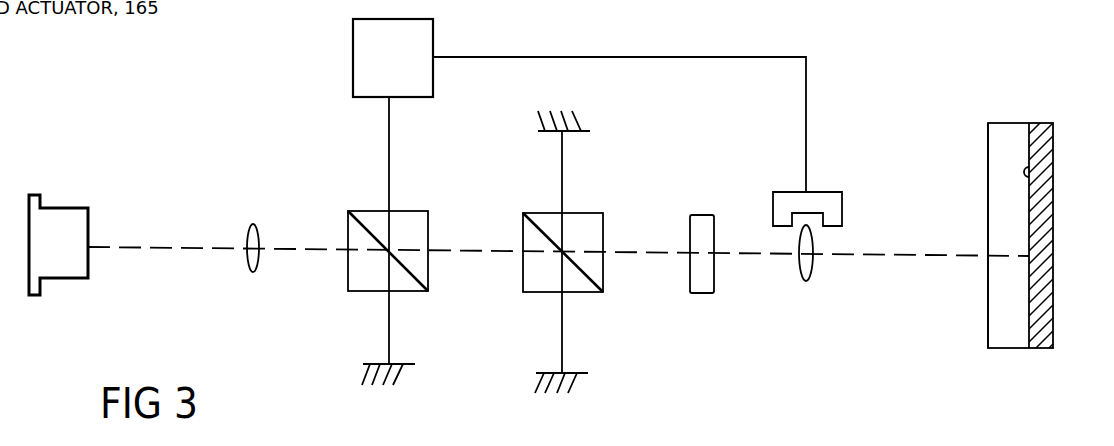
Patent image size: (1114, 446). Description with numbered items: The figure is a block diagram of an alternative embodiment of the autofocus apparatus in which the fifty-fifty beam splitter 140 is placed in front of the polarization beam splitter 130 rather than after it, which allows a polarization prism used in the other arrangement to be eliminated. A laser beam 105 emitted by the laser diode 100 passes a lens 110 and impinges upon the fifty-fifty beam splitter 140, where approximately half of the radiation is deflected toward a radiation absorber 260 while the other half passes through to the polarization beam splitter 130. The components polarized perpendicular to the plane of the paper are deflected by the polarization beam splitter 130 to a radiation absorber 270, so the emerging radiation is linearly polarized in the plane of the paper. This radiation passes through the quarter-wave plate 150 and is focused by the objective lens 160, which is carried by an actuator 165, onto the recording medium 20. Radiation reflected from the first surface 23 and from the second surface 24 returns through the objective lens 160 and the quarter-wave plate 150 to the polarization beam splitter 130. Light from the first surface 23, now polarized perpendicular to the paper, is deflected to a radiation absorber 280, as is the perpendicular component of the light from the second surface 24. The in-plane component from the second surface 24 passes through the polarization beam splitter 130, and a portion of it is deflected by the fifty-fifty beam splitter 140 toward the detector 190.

The recording medium 20 is at (1020, 221).
The first surface 23 is at (988, 197).
The second surface 24 is at (1030, 167).
The laser diode 100 is at (52, 278).
The laser beam 105 is at (136, 245).
The collimating lens 110 is at (248, 226).
The polarization beam splitter 130 is at (588, 213).
The 50/50 beam splitter 140 is at (407, 293).
The quarter-wave plate 150 is at (706, 294).
The objective lens 160 is at (800, 283).
The actuator 165 is at (823, 192).
The detector 190 is at (478, 102).
The radiation absorber 260 is at (365, 377).
The radiation absorber 270 is at (580, 387).
The radiation absorber 280 is at (577, 113).